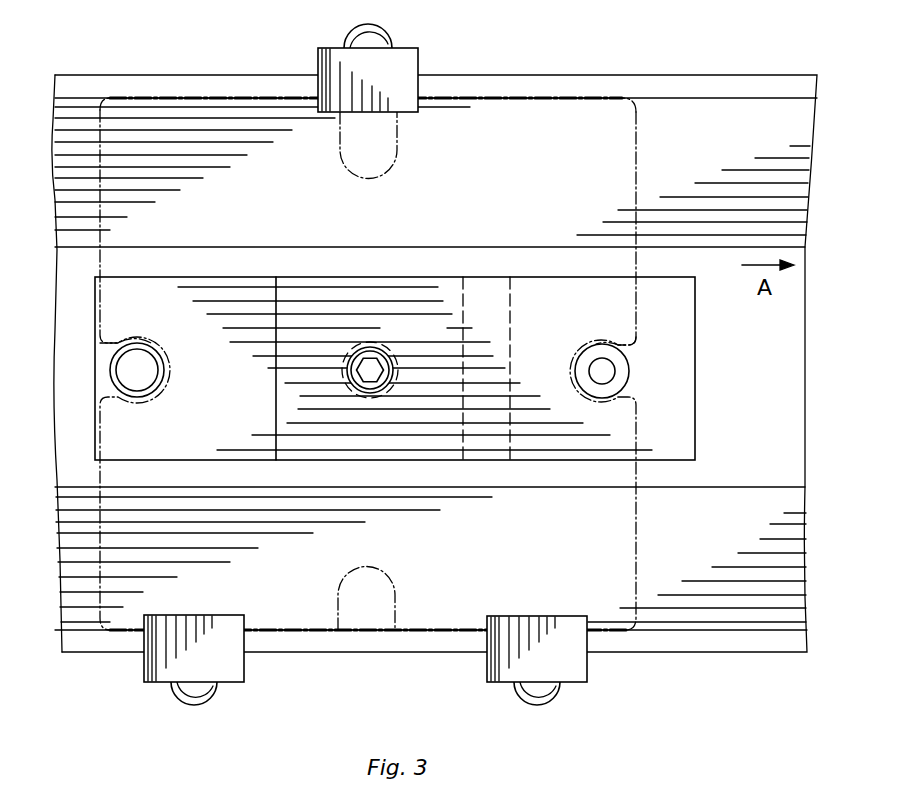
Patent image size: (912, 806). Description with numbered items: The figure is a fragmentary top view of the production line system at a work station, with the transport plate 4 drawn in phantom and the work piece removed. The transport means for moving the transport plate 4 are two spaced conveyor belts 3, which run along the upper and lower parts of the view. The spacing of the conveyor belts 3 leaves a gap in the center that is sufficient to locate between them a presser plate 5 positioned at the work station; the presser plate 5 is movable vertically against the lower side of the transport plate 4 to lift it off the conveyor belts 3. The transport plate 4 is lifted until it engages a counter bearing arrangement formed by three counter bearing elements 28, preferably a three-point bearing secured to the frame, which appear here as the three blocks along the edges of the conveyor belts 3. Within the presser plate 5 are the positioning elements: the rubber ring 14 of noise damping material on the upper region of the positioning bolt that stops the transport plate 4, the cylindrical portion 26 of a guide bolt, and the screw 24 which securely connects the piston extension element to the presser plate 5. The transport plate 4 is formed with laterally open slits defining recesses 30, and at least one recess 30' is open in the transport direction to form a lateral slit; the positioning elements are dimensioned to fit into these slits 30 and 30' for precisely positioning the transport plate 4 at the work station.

The conveyor belt 3 is at (776, 108).
The transport plate 4 is at (593, 112).
The presser plate 5 is at (246, 288).
The rubber ring 14 is at (620, 372).
The screw 24 is at (381, 360).
The cylindrical portion 26 is at (145, 373).
The counter bearing element 28 is at (405, 72).
The recess 30 is at (271, 371).
The recess 30' is at (670, 352).